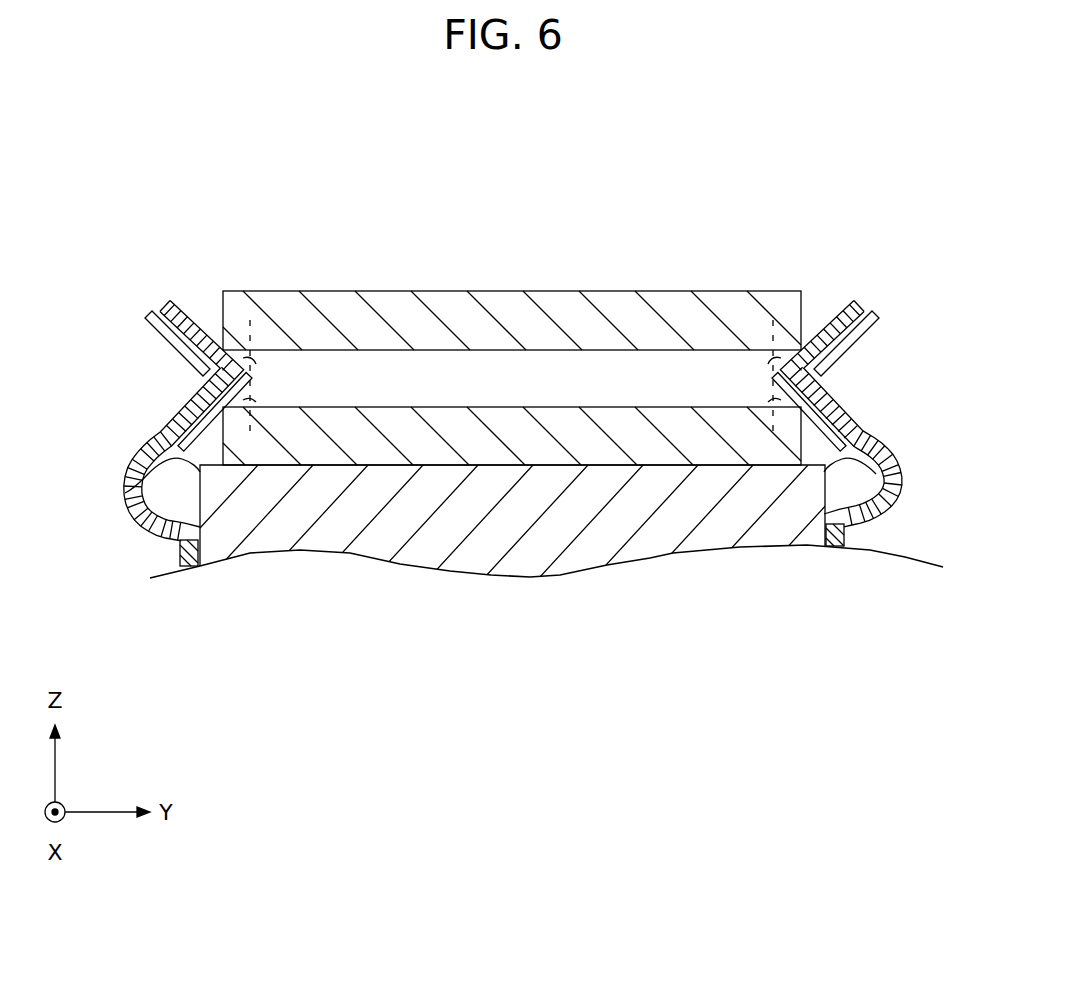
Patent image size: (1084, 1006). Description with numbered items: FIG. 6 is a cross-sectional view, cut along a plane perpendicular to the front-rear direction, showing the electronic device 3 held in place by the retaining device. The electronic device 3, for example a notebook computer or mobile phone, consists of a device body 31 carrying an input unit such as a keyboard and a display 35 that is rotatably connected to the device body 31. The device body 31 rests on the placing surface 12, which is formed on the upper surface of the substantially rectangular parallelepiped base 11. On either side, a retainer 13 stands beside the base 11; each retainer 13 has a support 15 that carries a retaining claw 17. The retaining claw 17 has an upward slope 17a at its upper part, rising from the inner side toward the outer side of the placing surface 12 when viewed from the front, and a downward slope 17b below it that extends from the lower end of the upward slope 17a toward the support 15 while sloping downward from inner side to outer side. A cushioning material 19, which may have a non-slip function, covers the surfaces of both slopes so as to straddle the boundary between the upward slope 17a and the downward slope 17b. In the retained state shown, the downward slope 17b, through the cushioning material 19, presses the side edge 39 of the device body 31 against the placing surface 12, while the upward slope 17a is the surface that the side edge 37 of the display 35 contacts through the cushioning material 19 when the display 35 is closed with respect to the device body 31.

The electronic device 3 is at (637, 166).
The base 11 is at (490, 540).
The placing surface 12 is at (125, 493).
The retainer 13 is at (121, 320).
The support 15 is at (156, 540).
The retaining claw 17 is at (506, 314).
The upward slope 17a is at (152, 308).
The downward slope 17b is at (138, 462).
The cushioning material 19 is at (207, 335).
The device body 31 is at (685, 430).
The display 35 is at (618, 296).
The side edge 37 is at (228, 358).
The side edge 39 is at (220, 455).